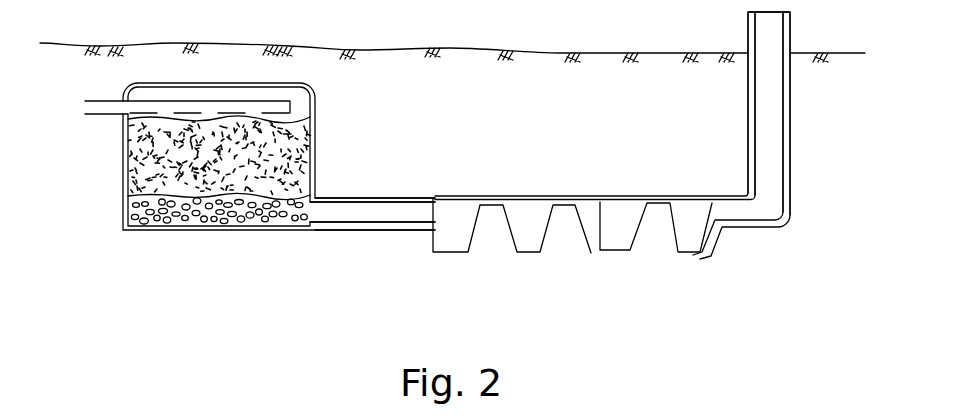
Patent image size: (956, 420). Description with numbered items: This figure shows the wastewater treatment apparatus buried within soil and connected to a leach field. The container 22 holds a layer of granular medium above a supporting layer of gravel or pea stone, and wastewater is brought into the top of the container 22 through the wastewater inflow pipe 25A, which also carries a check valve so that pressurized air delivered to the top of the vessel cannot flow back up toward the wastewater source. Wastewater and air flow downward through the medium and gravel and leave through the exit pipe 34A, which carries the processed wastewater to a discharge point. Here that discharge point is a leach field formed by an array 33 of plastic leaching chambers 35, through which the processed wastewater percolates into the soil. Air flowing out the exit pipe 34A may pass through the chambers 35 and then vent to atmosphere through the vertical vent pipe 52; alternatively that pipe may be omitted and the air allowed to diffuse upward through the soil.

The container 22 is at (123, 165).
The wastewater inflow pipe 25A is at (112, 101).
The exit pipe 34A is at (360, 230).
The array of leaching chambers 33 is at (685, 177).
The leaching chamber 35 is at (614, 207).
The vertical vent pipe 52 is at (790, 29).